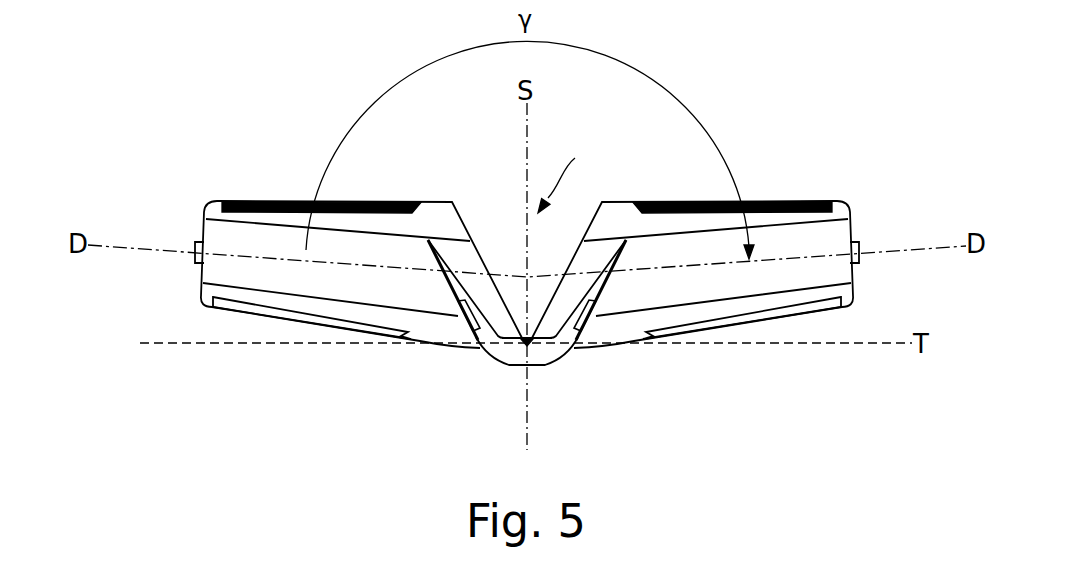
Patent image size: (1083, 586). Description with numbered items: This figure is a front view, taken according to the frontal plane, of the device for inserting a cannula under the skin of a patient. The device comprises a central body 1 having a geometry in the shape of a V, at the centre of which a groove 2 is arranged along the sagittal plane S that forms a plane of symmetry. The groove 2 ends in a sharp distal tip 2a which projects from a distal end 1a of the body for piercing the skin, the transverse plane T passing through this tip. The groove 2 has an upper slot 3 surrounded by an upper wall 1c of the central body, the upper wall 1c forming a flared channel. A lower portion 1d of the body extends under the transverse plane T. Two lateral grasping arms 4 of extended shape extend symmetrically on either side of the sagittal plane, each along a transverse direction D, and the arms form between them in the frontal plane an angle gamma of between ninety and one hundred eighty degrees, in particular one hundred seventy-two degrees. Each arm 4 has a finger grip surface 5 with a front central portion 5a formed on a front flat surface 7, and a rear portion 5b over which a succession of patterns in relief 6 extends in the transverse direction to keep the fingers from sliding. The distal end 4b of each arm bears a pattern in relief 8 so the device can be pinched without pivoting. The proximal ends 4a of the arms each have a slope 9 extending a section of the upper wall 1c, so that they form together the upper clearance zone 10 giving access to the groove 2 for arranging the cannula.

The central body 1 is at (519, 286).
The distal end of the body 1a is at (540, 358).
The upper wall 1c is at (503, 313).
The lower portion 1d is at (522, 366).
The groove 2 is at (486, 375).
The sharp distal tip 2a is at (533, 343).
The upper slot 3 is at (527, 338).
The lateral grasping arm 4 is at (519, 247).
The proximal end of the grasping arm 4a is at (527, 228).
The distal end of the grasping arm 4b is at (206, 227).
The finger grip surface 5 is at (526, 161).
The front central portion 5a is at (460, 314).
The rear portion 5b is at (526, 161).
The patterns in relief 6 is at (267, 201).
The front flat surface 7 is at (203, 283).
The pattern in relief 8 is at (196, 253).
The slope 9 is at (461, 215).
The clearance zone 10 is at (566, 173).